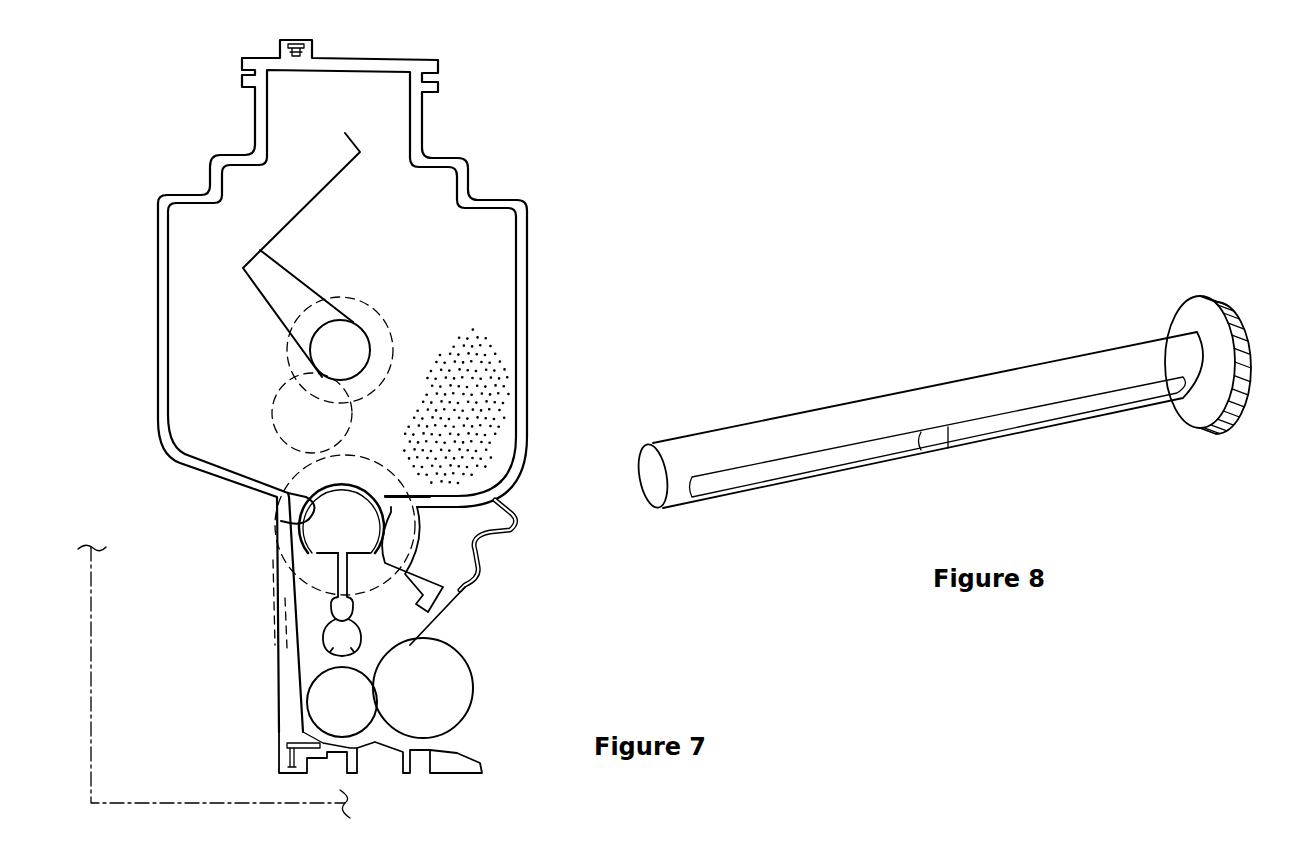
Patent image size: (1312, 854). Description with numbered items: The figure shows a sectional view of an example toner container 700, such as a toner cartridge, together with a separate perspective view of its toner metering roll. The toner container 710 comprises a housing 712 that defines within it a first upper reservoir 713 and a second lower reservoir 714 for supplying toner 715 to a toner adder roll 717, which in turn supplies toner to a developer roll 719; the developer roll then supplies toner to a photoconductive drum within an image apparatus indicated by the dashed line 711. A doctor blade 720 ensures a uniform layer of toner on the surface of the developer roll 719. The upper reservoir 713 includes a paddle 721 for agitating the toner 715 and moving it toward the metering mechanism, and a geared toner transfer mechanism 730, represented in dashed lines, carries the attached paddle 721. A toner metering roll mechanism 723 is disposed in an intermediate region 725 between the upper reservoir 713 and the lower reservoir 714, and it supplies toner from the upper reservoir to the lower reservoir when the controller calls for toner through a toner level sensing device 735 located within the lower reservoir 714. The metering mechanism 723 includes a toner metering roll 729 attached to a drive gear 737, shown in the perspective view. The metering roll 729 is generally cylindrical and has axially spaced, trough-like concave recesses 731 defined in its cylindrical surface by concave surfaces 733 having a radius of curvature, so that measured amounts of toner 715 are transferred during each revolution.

In FIG. 7, the toner container 700 is at (133, 113).
In FIG. 7, the toner container 710 is at (515, 176).
In FIG. 7, the dashed line 711 is at (91, 677).
In FIG. 7, the housing 712 is at (528, 229).
In FIG. 7, the first upper reservoir 713 is at (465, 268).
In FIG. 7, the second lower reservoir 714 is at (292, 650).
In FIG. 7, the toner 715 is at (487, 400).
In FIG. 7, the toner adder roll 717 is at (306, 688).
In FIG. 7, the developer roll 719 is at (480, 670).
In FIG. 7, the doctor blade 720 is at (433, 627).
In FIG. 7, the paddle 721 is at (258, 298).
In FIG. 7, the toner metering roll mechanism 723 is at (320, 532).
In FIG. 7, the intermediate region 725 is at (316, 520).
In FIG. 7, the toner metering roll 729 is at (348, 497).
In FIG. 8, the toner metering roll 729 is at (808, 388).
In FIG. 7, the toner transfer mechanism 730 is at (353, 293).
In FIG. 8, the concave recesses 731 is at (870, 458).
In FIG. 7, the concave surfaces 733 is at (352, 565).
In FIG. 8, the concave surfaces 733 is at (787, 470).
In FIG. 7, the toner level sensing device 735 is at (338, 583).
In FIG. 7, the drive gear 737 is at (413, 529).
In FIG. 8, the drive gear 737 is at (1227, 302).